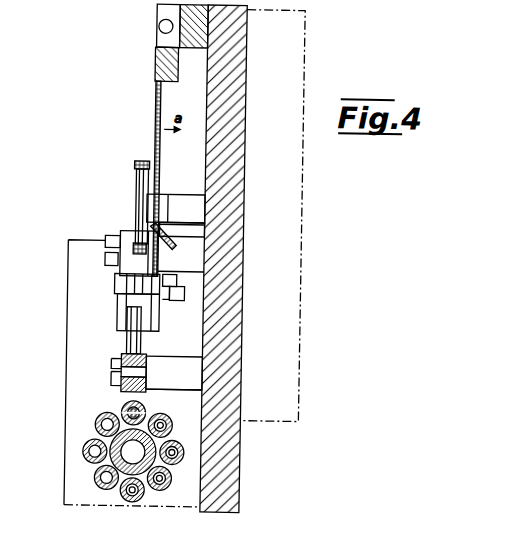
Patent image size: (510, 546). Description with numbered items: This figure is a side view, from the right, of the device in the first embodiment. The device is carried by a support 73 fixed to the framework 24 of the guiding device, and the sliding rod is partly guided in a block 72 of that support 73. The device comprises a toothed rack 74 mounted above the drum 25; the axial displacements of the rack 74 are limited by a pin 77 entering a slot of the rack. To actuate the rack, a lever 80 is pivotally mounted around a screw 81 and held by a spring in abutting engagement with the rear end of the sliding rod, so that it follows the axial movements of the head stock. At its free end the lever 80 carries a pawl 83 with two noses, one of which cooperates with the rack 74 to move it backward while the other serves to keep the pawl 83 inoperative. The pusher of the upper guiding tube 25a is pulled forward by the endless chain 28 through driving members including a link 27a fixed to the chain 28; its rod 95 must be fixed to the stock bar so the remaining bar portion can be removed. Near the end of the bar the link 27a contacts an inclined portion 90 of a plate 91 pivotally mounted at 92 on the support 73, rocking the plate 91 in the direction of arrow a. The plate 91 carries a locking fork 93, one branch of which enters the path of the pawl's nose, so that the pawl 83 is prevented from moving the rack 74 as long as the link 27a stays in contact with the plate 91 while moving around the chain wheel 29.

The framework 24 is at (413, 9).
The drum 25 is at (105, 461).
The upper guiding tube 25a is at (98, 470).
The link 27a is at (116, 283).
The endless chain 28 is at (133, 165).
The chain wheel 29 is at (136, 195).
The block 72 is at (80, 242).
The support 73 is at (228, 82).
The toothed rack 74 is at (130, 392).
The pin 77 is at (120, 382).
The lever 80 is at (126, 338).
The screw 81 is at (112, 238).
The pawl 83 is at (128, 351).
The inclined portion 90 is at (173, 249).
The plate 91 is at (152, 88).
The pivot 92 is at (155, 29).
The locking fork 93 is at (122, 324).
The rod 95 is at (148, 406).